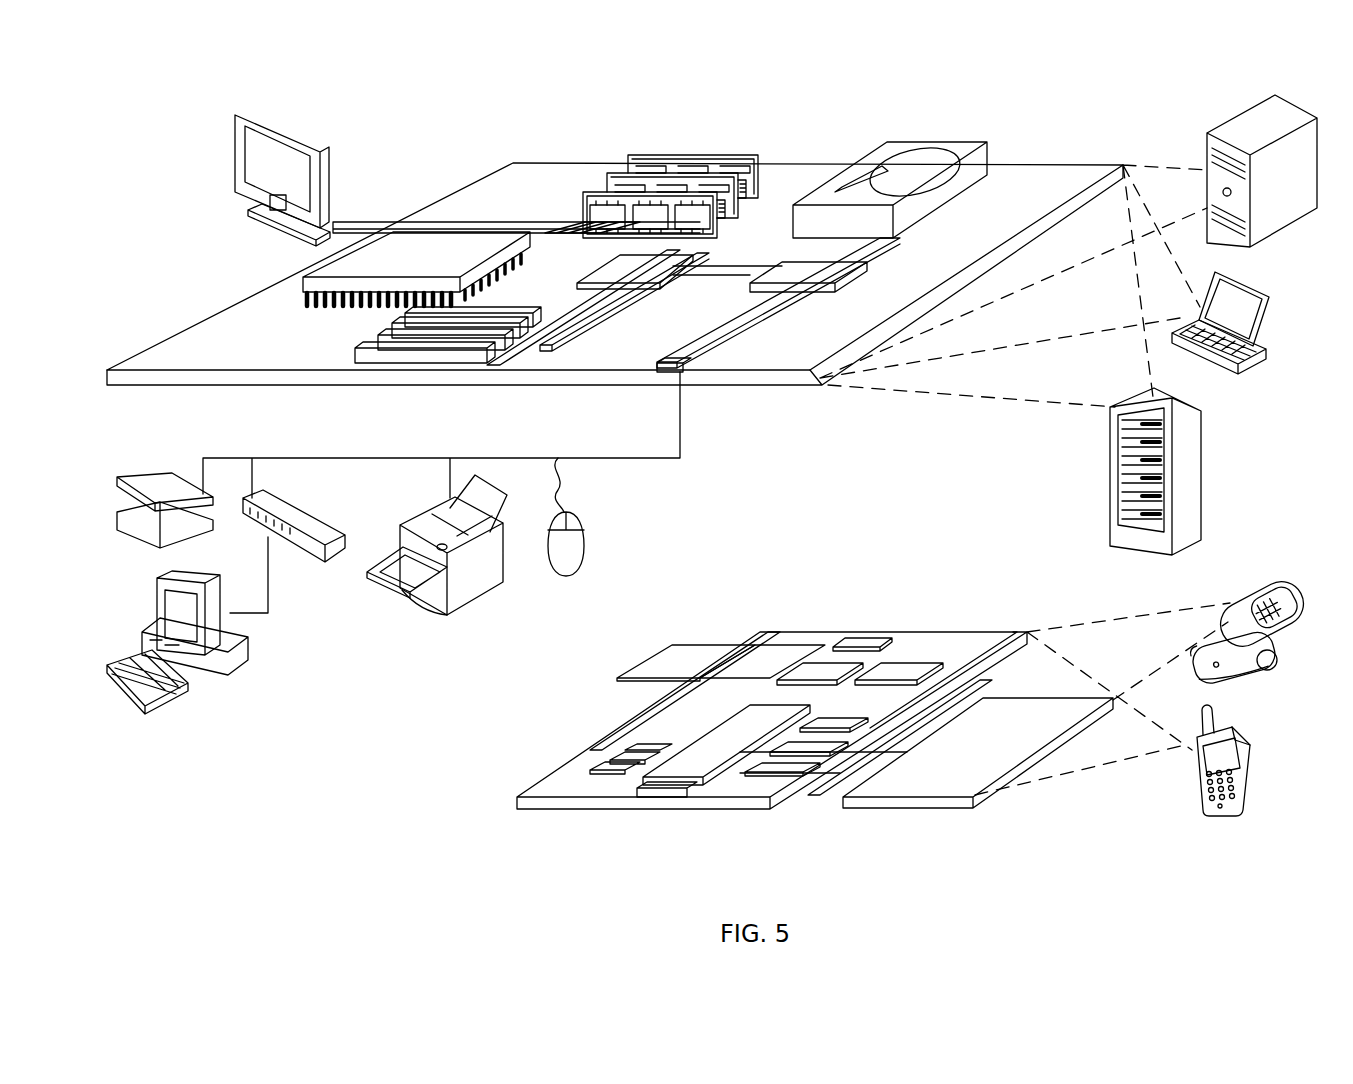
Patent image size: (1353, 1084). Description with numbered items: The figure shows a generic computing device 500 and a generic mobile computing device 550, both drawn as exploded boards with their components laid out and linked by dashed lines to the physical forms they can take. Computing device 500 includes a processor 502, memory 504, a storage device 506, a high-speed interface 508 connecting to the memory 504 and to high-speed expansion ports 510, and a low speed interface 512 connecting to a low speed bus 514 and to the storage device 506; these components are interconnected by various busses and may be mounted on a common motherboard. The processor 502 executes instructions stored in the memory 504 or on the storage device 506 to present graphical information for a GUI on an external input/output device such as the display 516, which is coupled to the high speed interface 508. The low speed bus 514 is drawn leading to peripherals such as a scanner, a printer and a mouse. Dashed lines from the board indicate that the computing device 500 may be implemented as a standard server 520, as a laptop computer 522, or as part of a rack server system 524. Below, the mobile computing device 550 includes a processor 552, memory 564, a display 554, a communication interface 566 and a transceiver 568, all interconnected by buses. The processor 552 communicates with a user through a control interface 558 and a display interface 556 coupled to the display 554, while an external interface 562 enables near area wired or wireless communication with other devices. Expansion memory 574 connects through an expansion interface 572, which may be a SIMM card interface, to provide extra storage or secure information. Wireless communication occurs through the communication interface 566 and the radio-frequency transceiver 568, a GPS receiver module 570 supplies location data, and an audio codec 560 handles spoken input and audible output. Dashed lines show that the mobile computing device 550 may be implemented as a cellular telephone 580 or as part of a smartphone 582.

The computing device 500 is at (433, 136).
The processor 502 is at (303, 286).
The memory 504 is at (643, 160).
The storage device 506 is at (878, 156).
The high-speed interface 508 is at (582, 248).
The high-speed expansion ports 510 is at (358, 348).
The low speed interface 512 is at (780, 269).
The low speed bus 514 is at (680, 372).
The display 516 is at (237, 109).
The standard server 520 is at (1202, 149).
The laptop computer 522 is at (1270, 288).
The rack server system 524 is at (1110, 498).
The mobile computing device 550 is at (483, 802).
The processor 552 is at (702, 778).
The display 554 is at (940, 777).
The display interface 556 is at (782, 776).
The control interface 558 is at (822, 754).
The audio codec 560 is at (835, 732).
The external interface 562 is at (666, 799).
The memory 564 is at (605, 760).
The communication interface 566 is at (822, 672).
The transceiver 568 is at (897, 672).
The GPS receiver module 570 is at (862, 646).
The expansion interface 572 is at (745, 652).
The expansion memory 574 is at (672, 646).
The cellular telephone 580 is at (1257, 586).
The smartphone 582 is at (1196, 771).